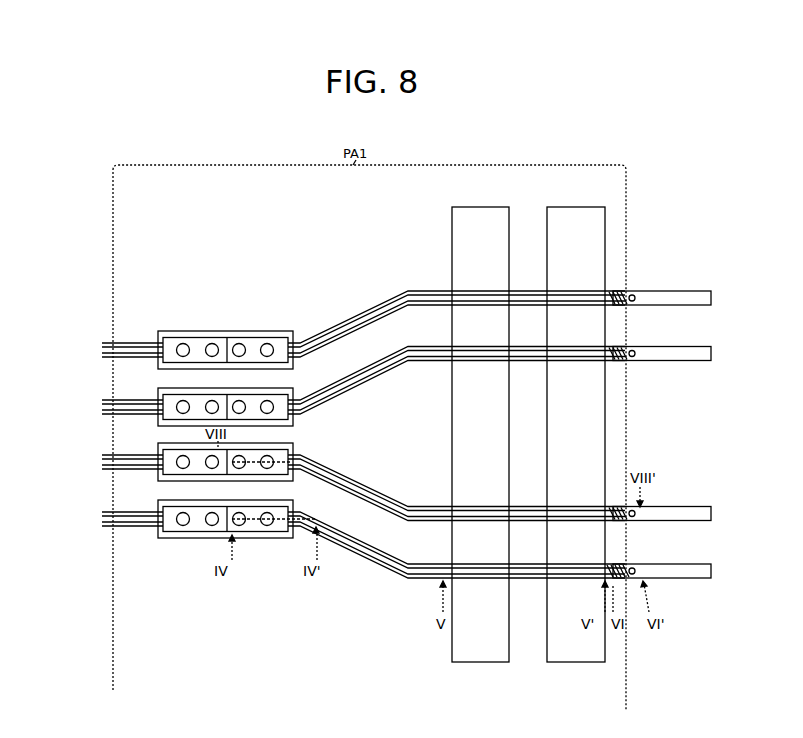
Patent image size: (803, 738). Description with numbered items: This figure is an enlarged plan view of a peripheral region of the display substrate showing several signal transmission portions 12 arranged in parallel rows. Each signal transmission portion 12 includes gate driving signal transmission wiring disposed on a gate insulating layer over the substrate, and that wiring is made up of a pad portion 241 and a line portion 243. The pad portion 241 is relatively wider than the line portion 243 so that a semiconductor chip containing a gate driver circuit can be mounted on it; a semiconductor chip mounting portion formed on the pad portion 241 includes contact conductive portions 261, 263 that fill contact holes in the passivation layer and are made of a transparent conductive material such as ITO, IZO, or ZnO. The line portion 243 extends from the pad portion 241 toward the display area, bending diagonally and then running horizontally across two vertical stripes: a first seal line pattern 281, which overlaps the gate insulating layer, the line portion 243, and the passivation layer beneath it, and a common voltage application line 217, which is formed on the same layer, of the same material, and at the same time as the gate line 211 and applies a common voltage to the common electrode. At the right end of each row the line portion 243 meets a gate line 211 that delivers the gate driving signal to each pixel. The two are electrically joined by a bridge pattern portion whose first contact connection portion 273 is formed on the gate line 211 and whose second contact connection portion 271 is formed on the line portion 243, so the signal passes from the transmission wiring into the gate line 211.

The signal transmission portion 12 is at (100, 460).
The gate line 211 is at (688, 582).
The common voltage application line 217 is at (572, 663).
The pad portion 241 is at (173, 536).
The line portion 243 is at (378, 565).
The contact conductive portion 261 is at (245, 536).
The contact conductive portion 263 is at (275, 536).
The second contact connection portion 271 is at (624, 582).
The first contact connection portion 273 is at (616, 580).
The first seal line pattern 281 is at (476, 663).